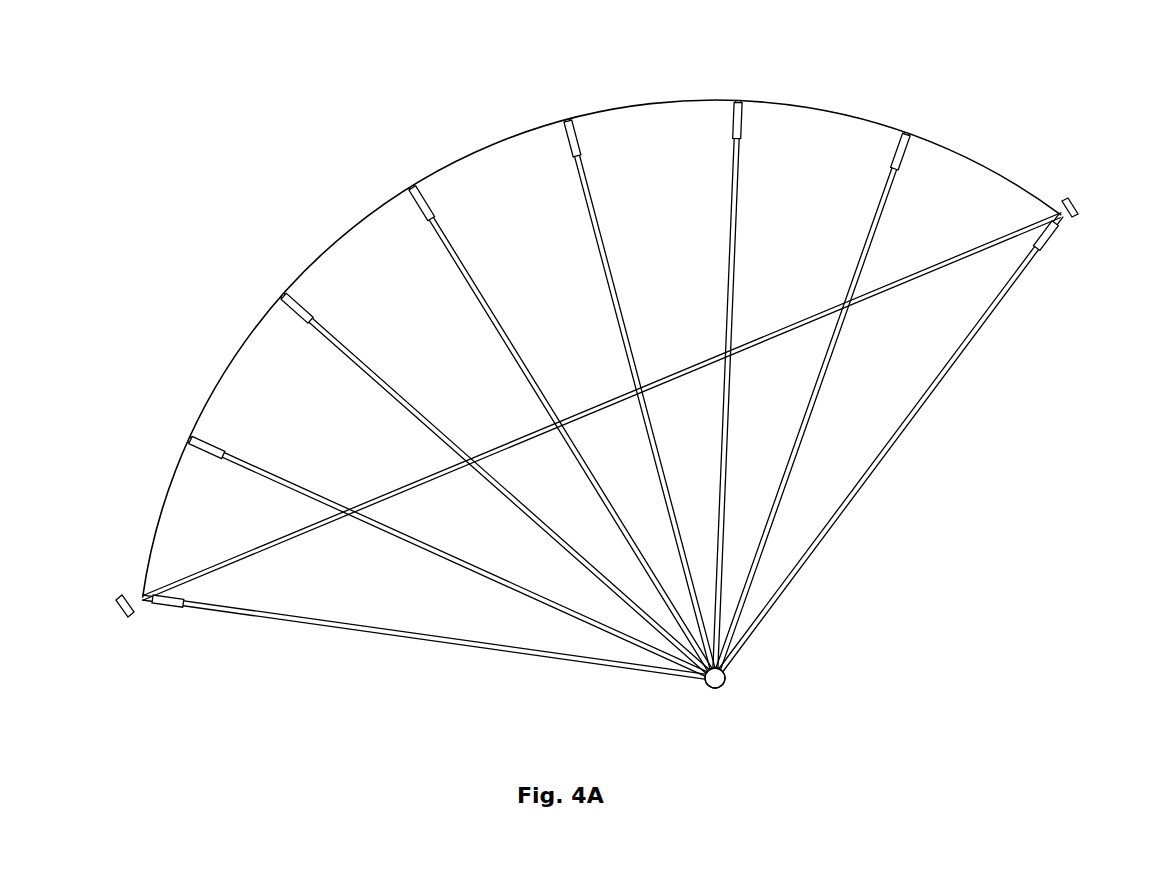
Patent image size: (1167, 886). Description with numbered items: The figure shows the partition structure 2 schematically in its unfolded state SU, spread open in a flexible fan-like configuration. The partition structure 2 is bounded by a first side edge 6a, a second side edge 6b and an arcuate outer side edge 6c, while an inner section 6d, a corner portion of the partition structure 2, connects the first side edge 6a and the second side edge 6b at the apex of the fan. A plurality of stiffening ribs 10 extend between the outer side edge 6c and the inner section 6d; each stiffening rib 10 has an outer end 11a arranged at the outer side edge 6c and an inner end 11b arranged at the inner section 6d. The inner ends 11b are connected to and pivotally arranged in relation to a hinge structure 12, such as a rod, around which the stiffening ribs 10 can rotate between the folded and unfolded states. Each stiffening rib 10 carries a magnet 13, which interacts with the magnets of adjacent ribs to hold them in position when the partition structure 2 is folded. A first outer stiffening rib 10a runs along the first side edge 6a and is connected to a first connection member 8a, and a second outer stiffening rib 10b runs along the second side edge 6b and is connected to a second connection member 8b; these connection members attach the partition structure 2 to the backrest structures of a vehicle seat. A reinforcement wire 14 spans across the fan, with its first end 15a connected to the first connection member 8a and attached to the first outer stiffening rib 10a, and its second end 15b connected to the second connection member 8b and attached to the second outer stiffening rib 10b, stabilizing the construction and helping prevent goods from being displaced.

The partition structure 2 is at (318, 115).
The first side edge 6a is at (353, 654).
The second side edge 6b is at (932, 440).
The outer side edge 6c is at (483, 146).
The inner section 6d is at (737, 693).
The first connection member 8a is at (118, 606).
The second connection member 8b is at (1079, 202).
The stiffening rib 10 is at (573, 183).
The first outer stiffening rib 10a is at (222, 616).
The second outer stiffening rib 10b is at (976, 324).
The outer end 11a is at (192, 445).
The inner end 11b is at (706, 686).
The hinge structure 12 is at (727, 678).
The magnet 13 is at (292, 315).
The reinforcement wire 14 is at (968, 252).
The first end 15a is at (140, 597).
The second end 15b is at (1072, 224).
The unfolded state SU is at (858, 84).